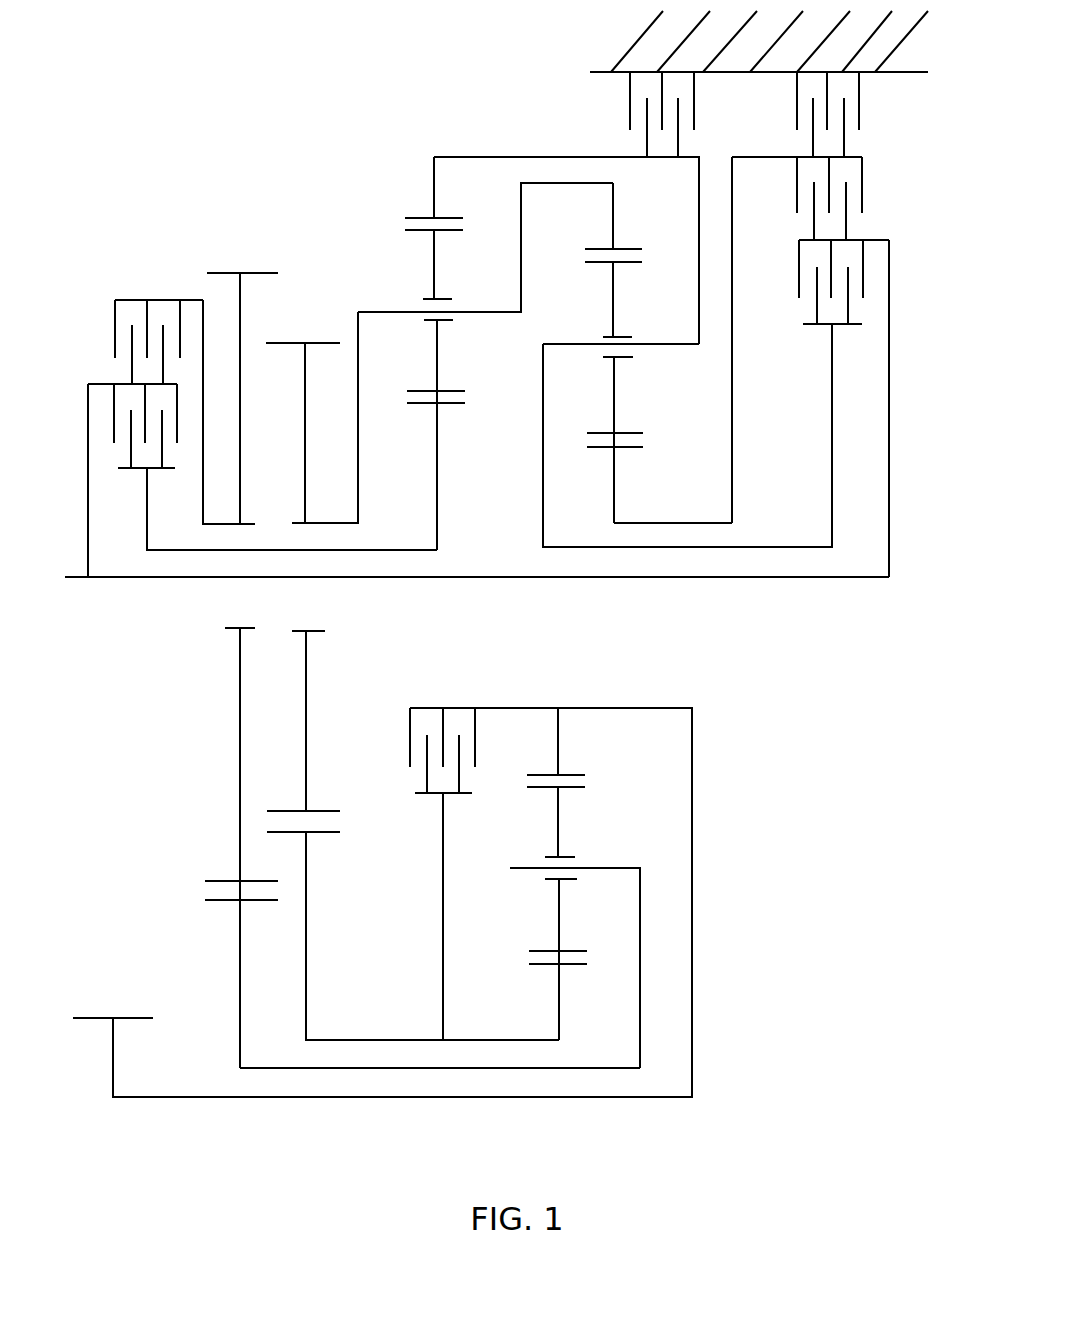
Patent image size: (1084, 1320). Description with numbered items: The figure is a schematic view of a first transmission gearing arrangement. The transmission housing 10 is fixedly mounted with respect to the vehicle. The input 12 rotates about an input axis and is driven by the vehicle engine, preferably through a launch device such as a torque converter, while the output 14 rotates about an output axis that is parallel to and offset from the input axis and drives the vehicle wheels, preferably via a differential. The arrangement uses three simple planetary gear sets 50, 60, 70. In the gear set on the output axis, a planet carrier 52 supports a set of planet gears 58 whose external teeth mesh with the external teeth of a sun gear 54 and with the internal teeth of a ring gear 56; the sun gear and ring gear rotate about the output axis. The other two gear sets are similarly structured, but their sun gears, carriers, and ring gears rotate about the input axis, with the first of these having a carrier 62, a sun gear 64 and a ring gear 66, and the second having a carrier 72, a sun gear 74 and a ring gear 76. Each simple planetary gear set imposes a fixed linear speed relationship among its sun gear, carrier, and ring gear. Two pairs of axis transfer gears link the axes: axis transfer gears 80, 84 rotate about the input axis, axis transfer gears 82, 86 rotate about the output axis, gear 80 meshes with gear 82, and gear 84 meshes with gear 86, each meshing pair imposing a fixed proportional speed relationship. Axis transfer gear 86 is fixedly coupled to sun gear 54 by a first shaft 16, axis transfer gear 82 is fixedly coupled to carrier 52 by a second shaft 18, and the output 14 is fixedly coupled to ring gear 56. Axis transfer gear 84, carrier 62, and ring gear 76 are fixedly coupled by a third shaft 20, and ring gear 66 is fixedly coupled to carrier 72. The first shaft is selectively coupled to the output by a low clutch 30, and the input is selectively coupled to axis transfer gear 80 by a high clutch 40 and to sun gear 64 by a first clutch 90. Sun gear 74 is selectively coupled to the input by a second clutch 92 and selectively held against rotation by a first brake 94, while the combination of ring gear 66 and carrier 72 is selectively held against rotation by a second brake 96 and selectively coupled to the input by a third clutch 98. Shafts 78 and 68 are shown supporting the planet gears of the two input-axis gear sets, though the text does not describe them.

The transmission housing 10 is at (653, 22).
The input 12 is at (723, 578).
The output 14 is at (112, 1057).
The first shaft 16 is at (392, 1040).
The second shaft 18 is at (607, 1068).
The third shaft 20 is at (322, 523).
The low clutch 30 is at (433, 703).
The high clutch 40 is at (113, 337).
The planetary gear set 50 is at (402, 927).
The planet carrier 52 is at (637, 863).
The sun gear 54 is at (560, 1018).
The ring gear 56 is at (555, 728).
The planet gears 58 is at (560, 825).
The planetary gear set 60 is at (421, 618).
The carrier 62 is at (367, 307).
The sun gear 64 is at (435, 467).
The ring gear 66 is at (435, 177).
The planet gear shaft 68 is at (435, 263).
The planetary gear set 70 is at (633, 396).
The carrier 72 is at (697, 347).
The sun gear 74 is at (614, 490).
The ring gear 76 is at (610, 222).
The planet gear shaft 78 is at (615, 313).
The axis transfer gear 80 is at (240, 307).
The axis transfer gear 82 is at (240, 1007).
The axis transfer gear 84 is at (305, 467).
The axis transfer gear 86 is at (309, 977).
The first clutch 90 is at (122, 470).
The second clutch 92 is at (862, 185).
The first brake 94 is at (859, 90).
The second brake 96 is at (630, 107).
The third clutch 98 is at (797, 273).